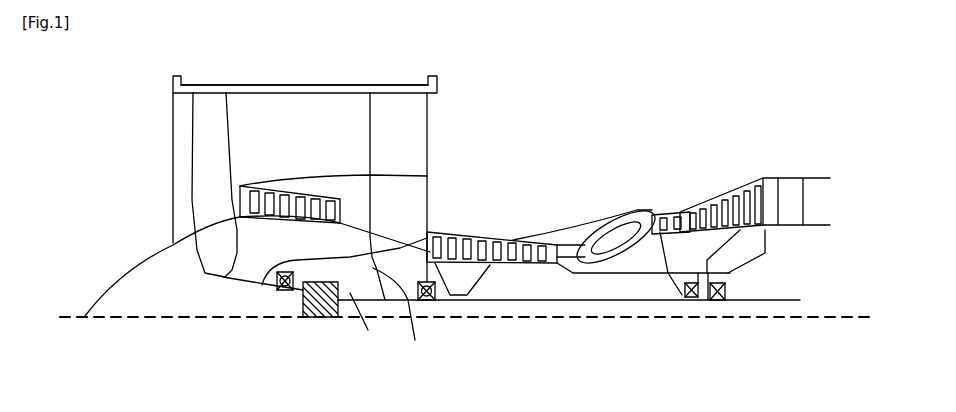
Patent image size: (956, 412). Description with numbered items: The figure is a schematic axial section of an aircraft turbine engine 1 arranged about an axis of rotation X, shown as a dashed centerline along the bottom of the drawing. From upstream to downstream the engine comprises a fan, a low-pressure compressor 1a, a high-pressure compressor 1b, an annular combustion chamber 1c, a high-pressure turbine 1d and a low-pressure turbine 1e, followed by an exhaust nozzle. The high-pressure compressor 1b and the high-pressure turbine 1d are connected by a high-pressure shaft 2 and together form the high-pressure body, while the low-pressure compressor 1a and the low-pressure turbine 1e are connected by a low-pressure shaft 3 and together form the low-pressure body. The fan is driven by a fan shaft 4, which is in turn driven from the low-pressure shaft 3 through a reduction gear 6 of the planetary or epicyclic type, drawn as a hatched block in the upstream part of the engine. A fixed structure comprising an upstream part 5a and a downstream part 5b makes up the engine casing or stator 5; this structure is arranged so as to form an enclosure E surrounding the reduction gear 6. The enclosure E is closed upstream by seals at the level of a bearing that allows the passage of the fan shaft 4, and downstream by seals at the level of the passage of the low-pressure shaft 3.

The turbine engine 1 is at (830, 203).
The low-pressure compressor 1a is at (267, 187).
The high-pressure compressor 1b is at (455, 233).
The annular combustion chamber 1c is at (612, 240).
The high-pressure turbine 1d is at (658, 223).
The low-pressure turbine 1e is at (763, 178).
The high-pressure shaft 2 is at (605, 275).
The low-pressure shaft 3 is at (547, 303).
The fan shaft 4 is at (253, 280).
The engine casing or stator 5 is at (203, 152).
The upstream part 5a is at (277, 272).
The downstream part 5b is at (404, 315).
The reduction gear 6 is at (325, 320).
The enclosure E is at (360, 322).
The axis of rotation X is at (85, 316).